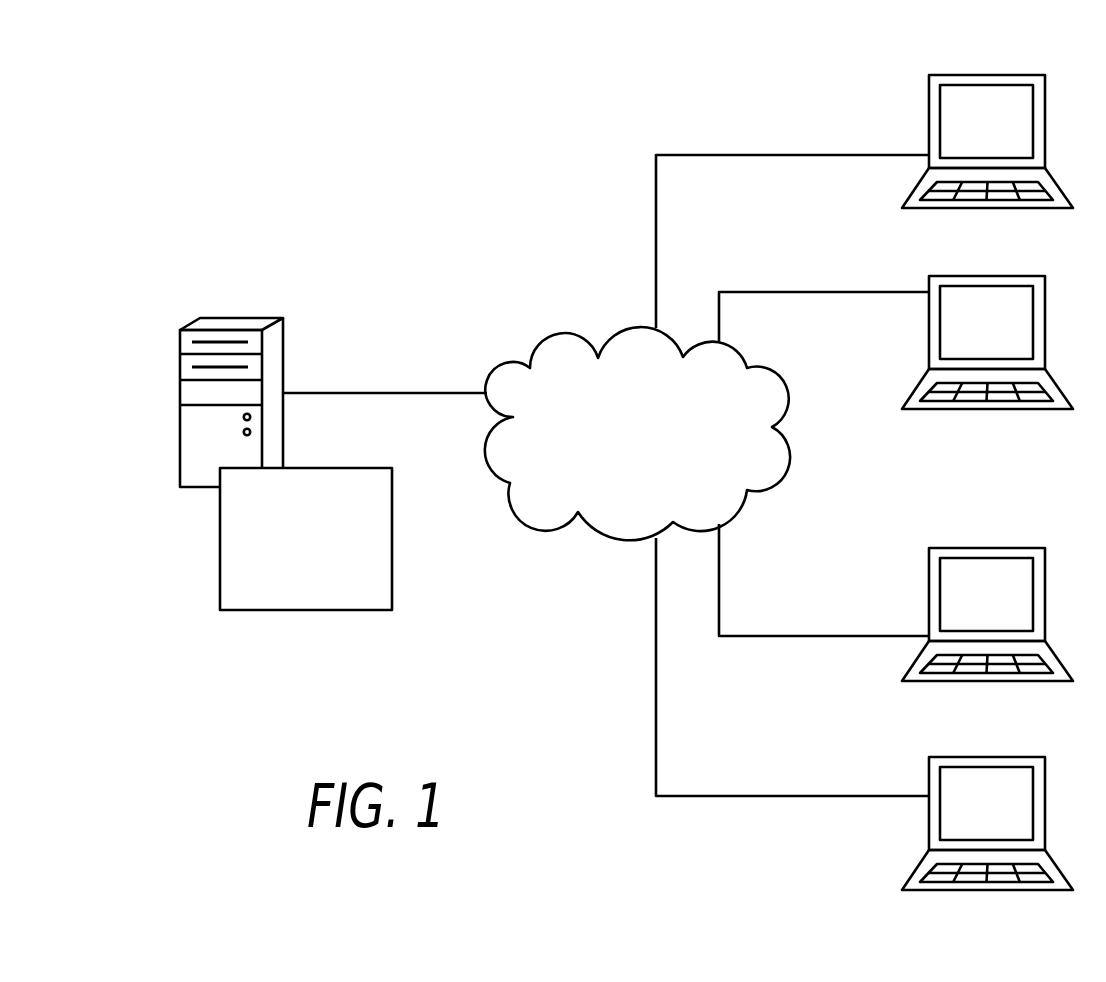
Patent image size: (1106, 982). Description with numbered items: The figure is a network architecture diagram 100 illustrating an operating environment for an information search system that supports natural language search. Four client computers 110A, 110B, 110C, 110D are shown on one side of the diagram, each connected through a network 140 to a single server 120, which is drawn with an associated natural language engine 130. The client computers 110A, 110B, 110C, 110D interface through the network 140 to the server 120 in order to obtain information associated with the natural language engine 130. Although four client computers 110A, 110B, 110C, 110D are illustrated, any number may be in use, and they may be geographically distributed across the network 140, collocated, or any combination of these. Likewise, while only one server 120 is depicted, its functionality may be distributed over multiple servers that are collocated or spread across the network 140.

The network architecture diagram 100 is at (415, 171).
The client computer 110A is at (987, 127).
The client computer 110B is at (987, 328).
The client computer 110C is at (987, 600).
The client computer 110D is at (987, 809).
The server 120 is at (231, 387).
The natural language engine 130 is at (288, 599).
The network 140 is at (655, 461).